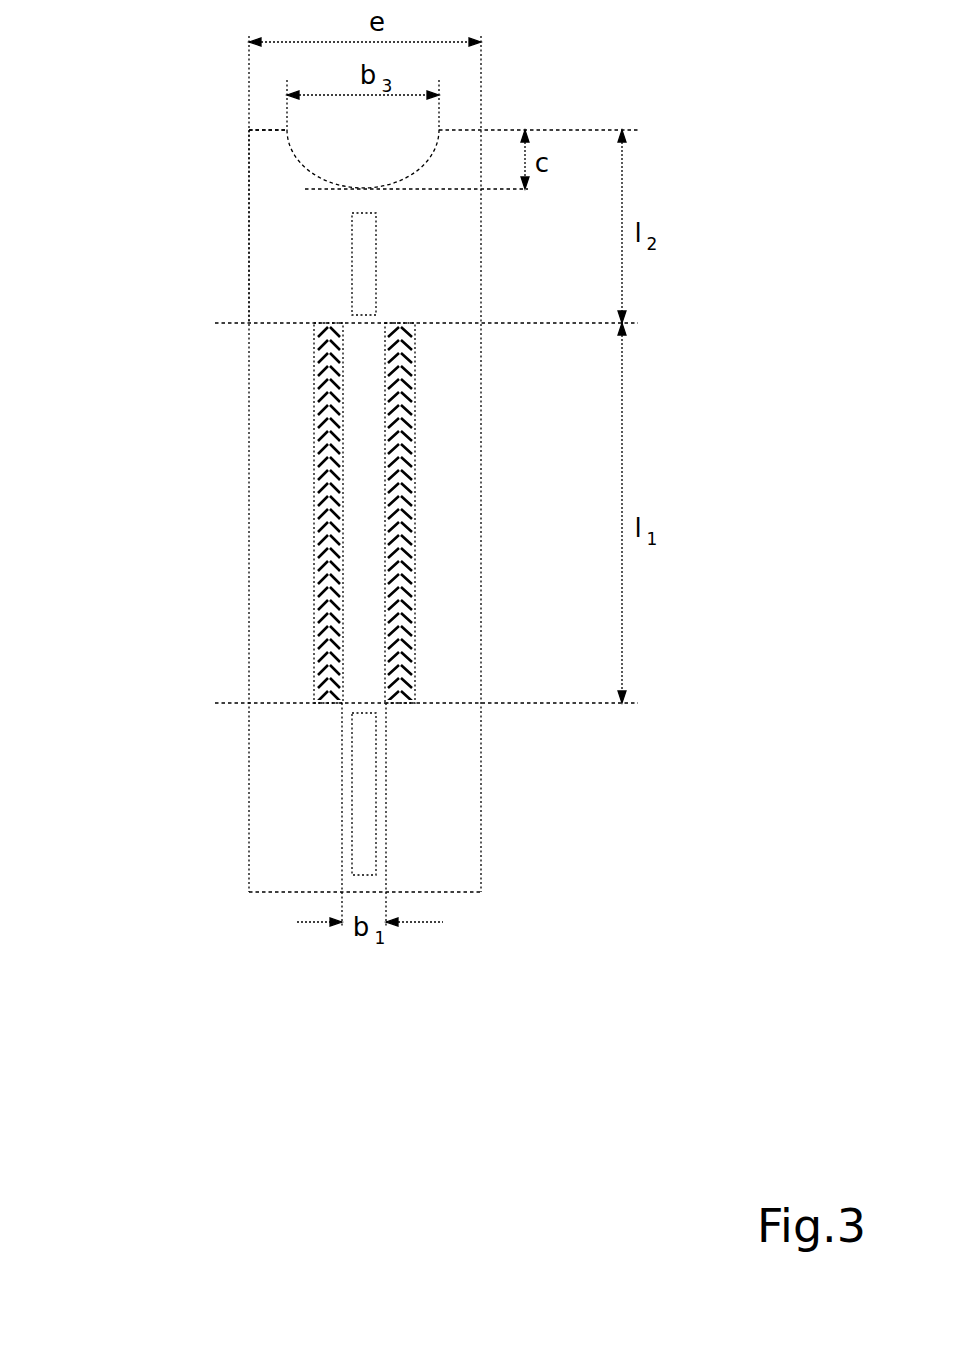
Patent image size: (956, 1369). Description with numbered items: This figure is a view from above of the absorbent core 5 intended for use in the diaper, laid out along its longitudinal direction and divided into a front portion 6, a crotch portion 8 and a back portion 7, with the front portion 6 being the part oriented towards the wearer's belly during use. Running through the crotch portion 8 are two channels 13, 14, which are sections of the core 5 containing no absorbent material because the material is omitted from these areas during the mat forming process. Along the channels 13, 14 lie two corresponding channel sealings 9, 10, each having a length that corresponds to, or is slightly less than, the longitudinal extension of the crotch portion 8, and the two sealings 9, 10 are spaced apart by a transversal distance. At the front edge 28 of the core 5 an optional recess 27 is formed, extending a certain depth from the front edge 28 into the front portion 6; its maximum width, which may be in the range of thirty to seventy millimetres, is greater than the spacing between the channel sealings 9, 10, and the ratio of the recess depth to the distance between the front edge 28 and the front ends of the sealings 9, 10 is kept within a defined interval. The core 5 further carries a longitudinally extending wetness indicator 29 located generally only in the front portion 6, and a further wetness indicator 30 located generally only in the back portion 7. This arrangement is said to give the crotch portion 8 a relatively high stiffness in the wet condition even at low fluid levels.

The absorbent core 5 is at (258, 152).
The front portion 6 is at (108, 203).
The back portion 7 is at (225, 795).
The crotch portion 8 is at (152, 445).
The channel sealing 9 is at (316, 623).
The channel sealing 10 is at (407, 463).
The channel 13 is at (316, 528).
The channel 14 is at (414, 413).
The recess 27 is at (298, 160).
The front edge 28 is at (280, 128).
The wetness indicator 29 is at (355, 268).
The wetness indicator 30 is at (366, 783).